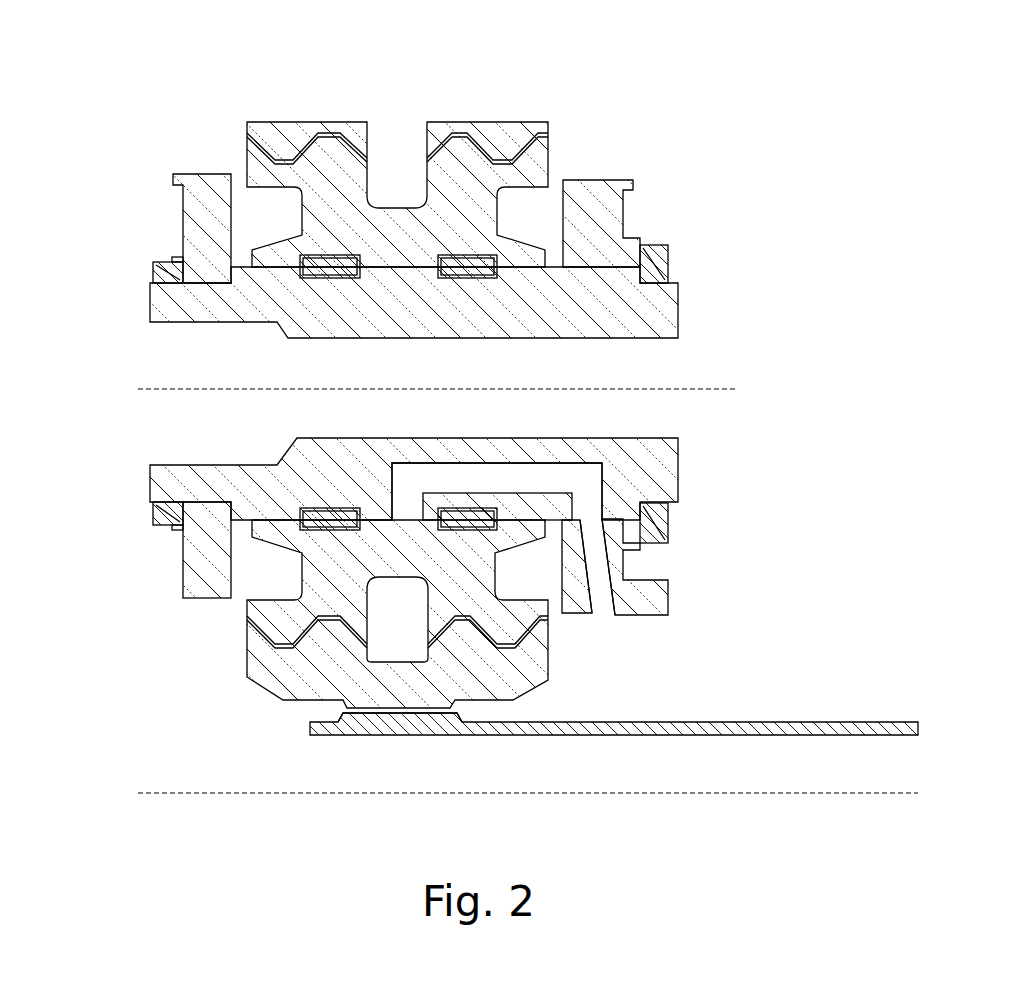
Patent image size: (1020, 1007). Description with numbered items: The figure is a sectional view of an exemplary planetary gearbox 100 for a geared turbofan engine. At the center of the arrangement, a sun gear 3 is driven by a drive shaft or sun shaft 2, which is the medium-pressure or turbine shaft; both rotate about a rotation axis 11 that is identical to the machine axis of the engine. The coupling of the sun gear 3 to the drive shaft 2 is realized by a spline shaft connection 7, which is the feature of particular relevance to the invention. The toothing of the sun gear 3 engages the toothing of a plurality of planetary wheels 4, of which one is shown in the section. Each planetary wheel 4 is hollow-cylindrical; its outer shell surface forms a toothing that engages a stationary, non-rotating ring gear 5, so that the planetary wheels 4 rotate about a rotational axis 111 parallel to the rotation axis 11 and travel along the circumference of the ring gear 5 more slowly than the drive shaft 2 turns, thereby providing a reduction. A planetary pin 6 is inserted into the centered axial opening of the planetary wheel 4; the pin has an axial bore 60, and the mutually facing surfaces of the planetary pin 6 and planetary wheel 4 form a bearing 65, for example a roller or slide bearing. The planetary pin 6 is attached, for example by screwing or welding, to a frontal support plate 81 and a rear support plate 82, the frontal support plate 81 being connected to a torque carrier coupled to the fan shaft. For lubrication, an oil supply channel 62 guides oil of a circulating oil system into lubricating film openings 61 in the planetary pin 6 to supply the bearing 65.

The planetary gearbox 100 is at (112, 266).
The sun shaft 2 is at (590, 722).
The sun gear 3 is at (515, 683).
The planet wheel 4 is at (542, 157).
The ring gear 5 is at (505, 140).
The planetary pin 6 is at (650, 314).
The spline shaft connection 7 is at (322, 715).
The rotation axis 11 is at (352, 795).
The axial bore 60 is at (660, 368).
The lubricating film openings 61 is at (497, 478).
The oil supply channel 62 is at (600, 590).
The bearing 65 is at (400, 267).
The frontal support plate 81 is at (202, 208).
The rear support plate 82 is at (608, 217).
The rotational axis 111 is at (710, 389).